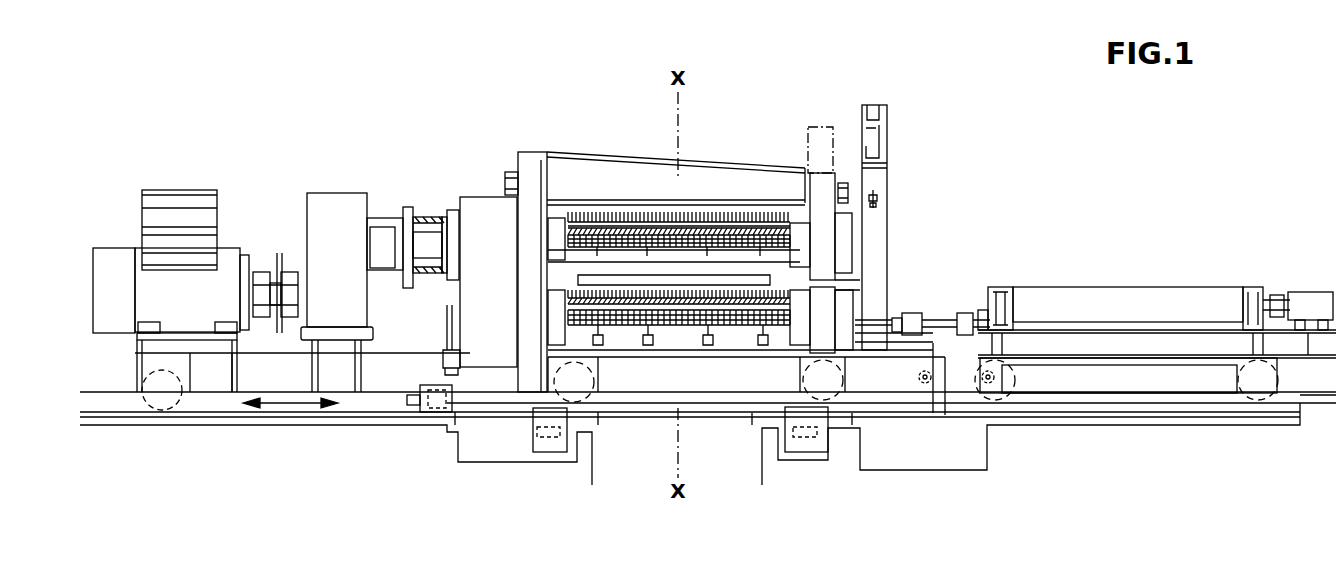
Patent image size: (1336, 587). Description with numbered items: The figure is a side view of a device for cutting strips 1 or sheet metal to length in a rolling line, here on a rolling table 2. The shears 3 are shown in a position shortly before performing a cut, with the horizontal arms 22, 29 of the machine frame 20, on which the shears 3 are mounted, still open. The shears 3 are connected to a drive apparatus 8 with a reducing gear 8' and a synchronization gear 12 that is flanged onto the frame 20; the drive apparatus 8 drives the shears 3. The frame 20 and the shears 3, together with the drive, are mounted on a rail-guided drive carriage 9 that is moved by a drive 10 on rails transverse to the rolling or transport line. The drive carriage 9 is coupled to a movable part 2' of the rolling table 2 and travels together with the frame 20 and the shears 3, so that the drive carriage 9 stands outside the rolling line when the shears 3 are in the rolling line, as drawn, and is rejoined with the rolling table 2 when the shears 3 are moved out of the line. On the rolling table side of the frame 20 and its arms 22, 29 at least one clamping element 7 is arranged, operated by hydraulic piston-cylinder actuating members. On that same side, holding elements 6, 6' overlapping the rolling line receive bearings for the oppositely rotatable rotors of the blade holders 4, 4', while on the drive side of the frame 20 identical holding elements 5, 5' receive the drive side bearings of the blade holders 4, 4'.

The strips 1 is at (713, 272).
The rolling table 2 is at (795, 232).
The movable part of the rolling table 2' is at (1160, 305).
The shears 3 is at (646, 152).
The blade holder 4 is at (679, 187).
The blade holder 4' is at (669, 232).
The holding element 5 is at (479, 331).
The holding element 5' is at (503, 191).
The holding element 6 is at (860, 231).
The holding element 6' is at (864, 313).
The clamping element 7 is at (873, 105).
The drive apparatus 8 is at (171, 284).
The reducing gear 8' is at (333, 260).
The drive carriage 9 is at (567, 380).
The drive 10 is at (288, 392).
The synchronization gear 12 is at (477, 261).
The machine frame 20 is at (537, 168).
The horizontal arm 22 is at (767, 188).
The horizontal arm 29 is at (787, 388).